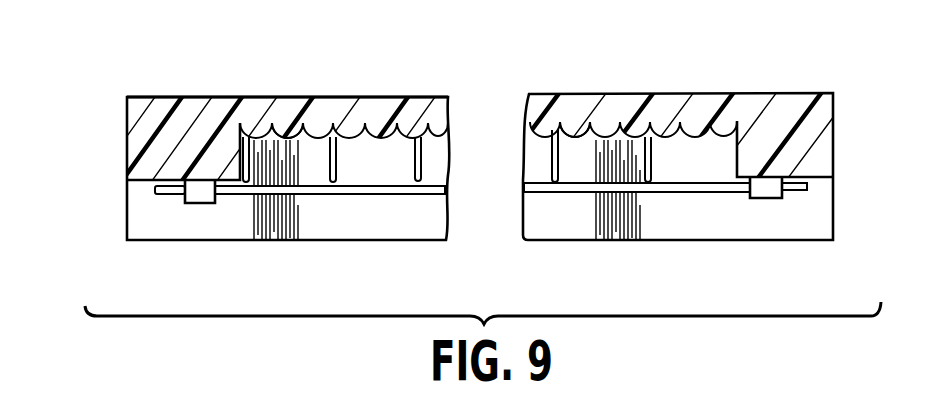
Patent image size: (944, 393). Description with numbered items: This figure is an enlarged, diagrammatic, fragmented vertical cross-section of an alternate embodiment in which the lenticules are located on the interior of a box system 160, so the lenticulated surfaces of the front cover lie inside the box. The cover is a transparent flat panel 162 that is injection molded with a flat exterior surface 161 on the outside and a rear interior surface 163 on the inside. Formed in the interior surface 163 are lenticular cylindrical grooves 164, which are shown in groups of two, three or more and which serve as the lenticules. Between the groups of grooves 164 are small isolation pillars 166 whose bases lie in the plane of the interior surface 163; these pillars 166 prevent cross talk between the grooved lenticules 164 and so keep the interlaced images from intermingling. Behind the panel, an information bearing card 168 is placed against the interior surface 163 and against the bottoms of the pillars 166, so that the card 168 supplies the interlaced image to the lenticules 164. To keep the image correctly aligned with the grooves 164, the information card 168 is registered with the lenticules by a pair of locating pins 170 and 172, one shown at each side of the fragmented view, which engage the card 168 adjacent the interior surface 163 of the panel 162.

The box system 160 is at (122, 205).
The flat exterior surface 161 is at (332, 97).
The transparent flat panel 162 is at (253, 72).
The rear interior surface 163 is at (143, 183).
The lenticular cylindrical grooves 164 is at (381, 131).
The isolation pillars 166 is at (331, 191).
The information bearing card 168 is at (317, 192).
The locating pin 170 is at (198, 194).
The locating pin 172 is at (762, 184).